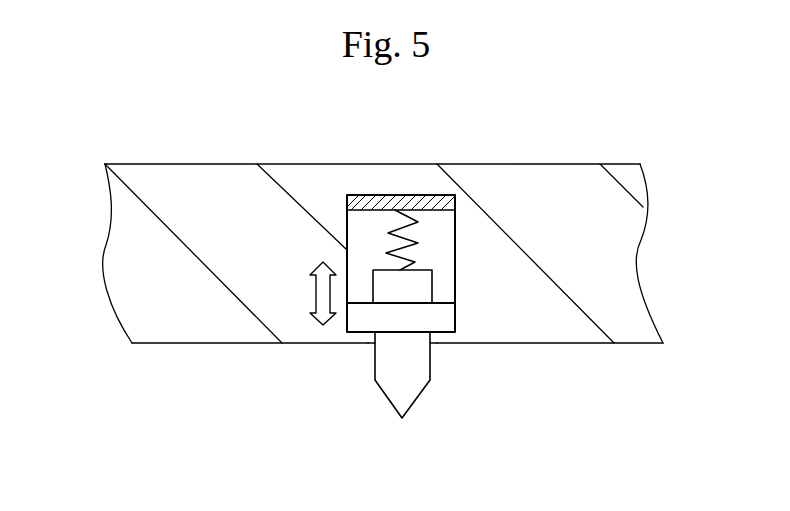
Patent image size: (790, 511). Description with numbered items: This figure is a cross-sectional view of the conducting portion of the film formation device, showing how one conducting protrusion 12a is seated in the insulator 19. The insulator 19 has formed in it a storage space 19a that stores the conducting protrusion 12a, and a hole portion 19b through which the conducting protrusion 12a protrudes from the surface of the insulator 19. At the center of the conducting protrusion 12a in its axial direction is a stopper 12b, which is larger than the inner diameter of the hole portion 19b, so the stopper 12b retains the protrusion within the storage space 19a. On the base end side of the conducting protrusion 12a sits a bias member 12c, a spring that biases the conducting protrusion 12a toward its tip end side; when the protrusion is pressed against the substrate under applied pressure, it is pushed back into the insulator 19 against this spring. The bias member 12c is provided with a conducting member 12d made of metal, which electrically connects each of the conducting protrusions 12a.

The insulator 19 is at (199, 332).
The storage space 19a is at (363, 238).
The hole portion 19b is at (365, 335).
The conducting protrusion 12a is at (388, 390).
The stopper 12b is at (447, 315).
The bias member 12c is at (405, 246).
The conducting member 12d is at (397, 196).